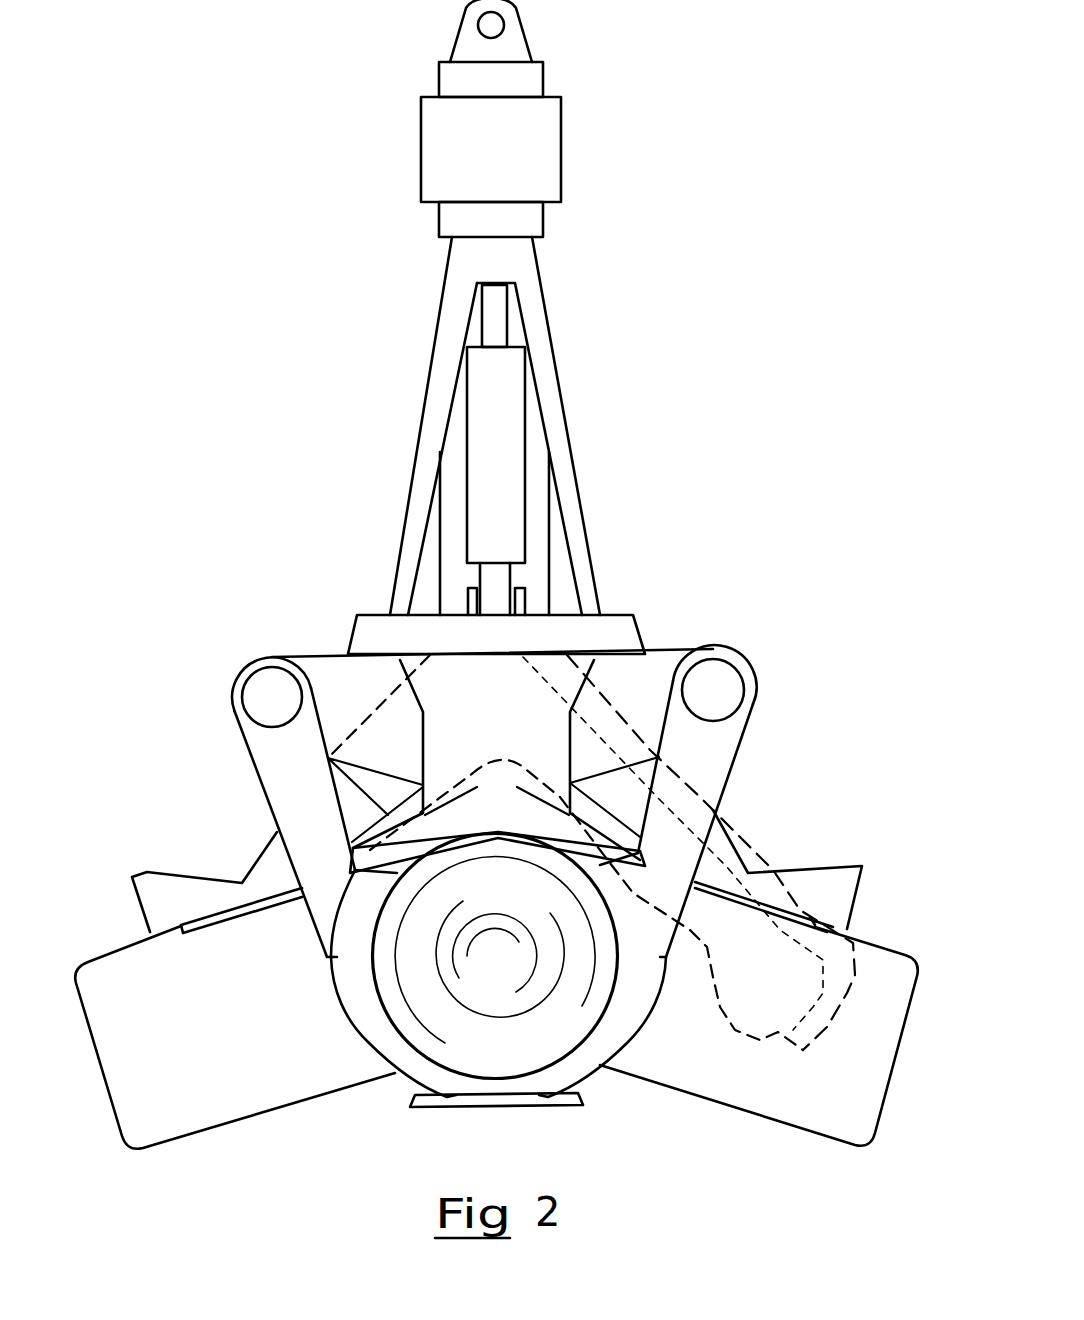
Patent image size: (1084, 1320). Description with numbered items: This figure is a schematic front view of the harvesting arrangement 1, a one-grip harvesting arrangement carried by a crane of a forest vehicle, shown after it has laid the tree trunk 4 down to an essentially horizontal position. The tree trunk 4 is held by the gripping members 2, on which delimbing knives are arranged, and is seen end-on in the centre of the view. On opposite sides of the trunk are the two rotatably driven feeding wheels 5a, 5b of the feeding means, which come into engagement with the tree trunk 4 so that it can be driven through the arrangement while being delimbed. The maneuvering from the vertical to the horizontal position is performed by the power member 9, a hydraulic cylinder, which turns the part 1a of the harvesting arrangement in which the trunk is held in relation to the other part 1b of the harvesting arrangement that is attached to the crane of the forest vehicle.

The harvesting arrangement 1 is at (622, 202).
The part of the harvesting arrangement in which the trunk is held 1a is at (667, 660).
The other part of the harvesting arrangement attached to the crane 1b is at (540, 84).
The gripping members 2 is at (548, 1113).
The tree trunk 4 is at (505, 977).
The feeding wheel 5a is at (263, 1100).
The feeding wheel 5b is at (697, 1078).
The power member 9 is at (510, 392).